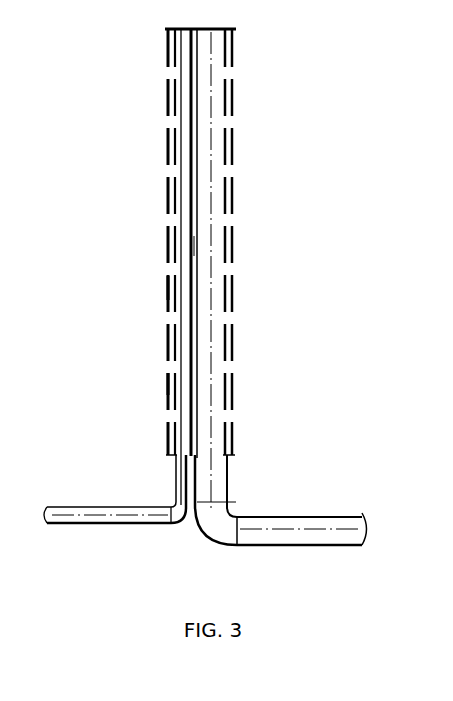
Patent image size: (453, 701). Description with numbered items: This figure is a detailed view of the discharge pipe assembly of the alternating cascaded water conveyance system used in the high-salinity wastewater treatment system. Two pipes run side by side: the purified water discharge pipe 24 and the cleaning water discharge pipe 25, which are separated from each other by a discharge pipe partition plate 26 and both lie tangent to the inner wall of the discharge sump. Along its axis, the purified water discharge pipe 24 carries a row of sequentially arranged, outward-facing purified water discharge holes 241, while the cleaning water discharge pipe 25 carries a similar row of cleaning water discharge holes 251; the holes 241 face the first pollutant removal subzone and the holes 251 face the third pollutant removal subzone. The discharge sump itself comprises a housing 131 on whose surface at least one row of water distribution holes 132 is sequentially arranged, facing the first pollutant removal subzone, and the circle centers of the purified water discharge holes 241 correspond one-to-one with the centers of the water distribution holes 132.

The purified water discharge pipe 24 is at (232, 433).
The cleaning water discharge pipe 25 is at (172, 62).
The discharge pipe partition plate 26 is at (195, 245).
The purified water discharge hole 241 is at (228, 118).
The cleaning water discharge hole 251 is at (172, 117).
The housing 131 is at (168, 288).
The water distribution hole 132 is at (168, 365).